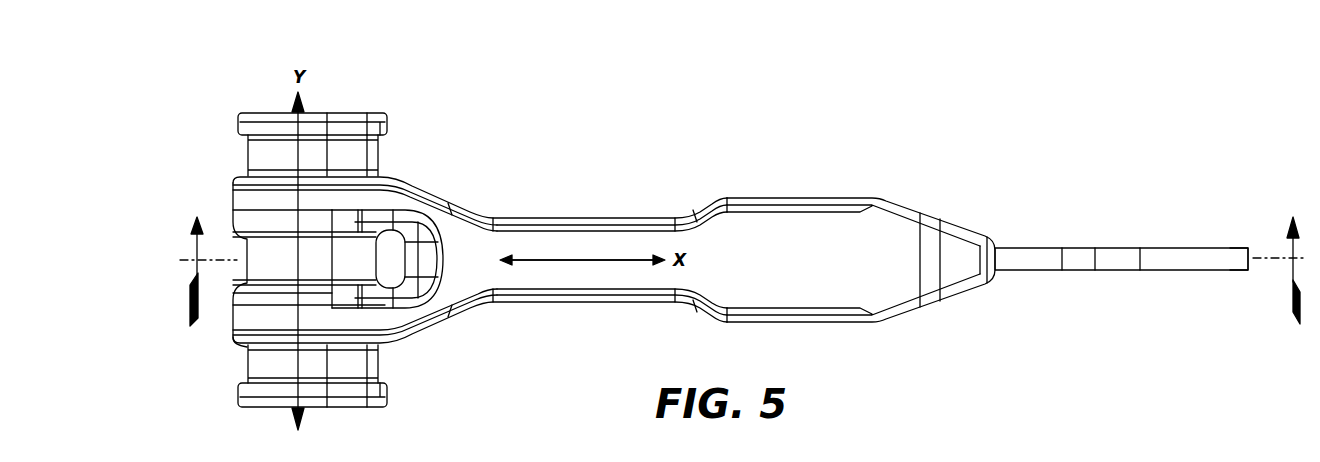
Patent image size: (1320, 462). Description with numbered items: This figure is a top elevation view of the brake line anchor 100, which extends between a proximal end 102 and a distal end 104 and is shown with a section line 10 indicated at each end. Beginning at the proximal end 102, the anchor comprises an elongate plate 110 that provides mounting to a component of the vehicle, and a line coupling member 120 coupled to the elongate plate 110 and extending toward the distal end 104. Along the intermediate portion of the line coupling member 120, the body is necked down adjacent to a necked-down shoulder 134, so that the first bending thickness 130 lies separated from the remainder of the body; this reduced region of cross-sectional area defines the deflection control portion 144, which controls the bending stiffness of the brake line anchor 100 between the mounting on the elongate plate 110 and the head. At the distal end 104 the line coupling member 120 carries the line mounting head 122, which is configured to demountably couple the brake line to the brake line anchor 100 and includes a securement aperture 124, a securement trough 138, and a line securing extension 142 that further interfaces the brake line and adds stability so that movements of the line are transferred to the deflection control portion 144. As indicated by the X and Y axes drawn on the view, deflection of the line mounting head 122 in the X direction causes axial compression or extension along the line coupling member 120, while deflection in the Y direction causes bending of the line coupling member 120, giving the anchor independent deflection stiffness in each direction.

The section line 10 is at (733, 271).
The brake line anchor 100 is at (527, 133).
The proximal end 102 is at (1258, 231).
The distal end 104 is at (217, 210).
The elongate plate 110 is at (1030, 260).
The line coupling member 120 is at (820, 263).
The line mounting head 122 is at (342, 197).
The securement aperture 124 is at (400, 240).
The first bending thickness 130 is at (583, 305).
The necked-down shoulder 134 is at (693, 208).
The securement trough 138 is at (315, 270).
The line securing extension 142 is at (278, 153).
The deflection control portion 144 is at (680, 181).